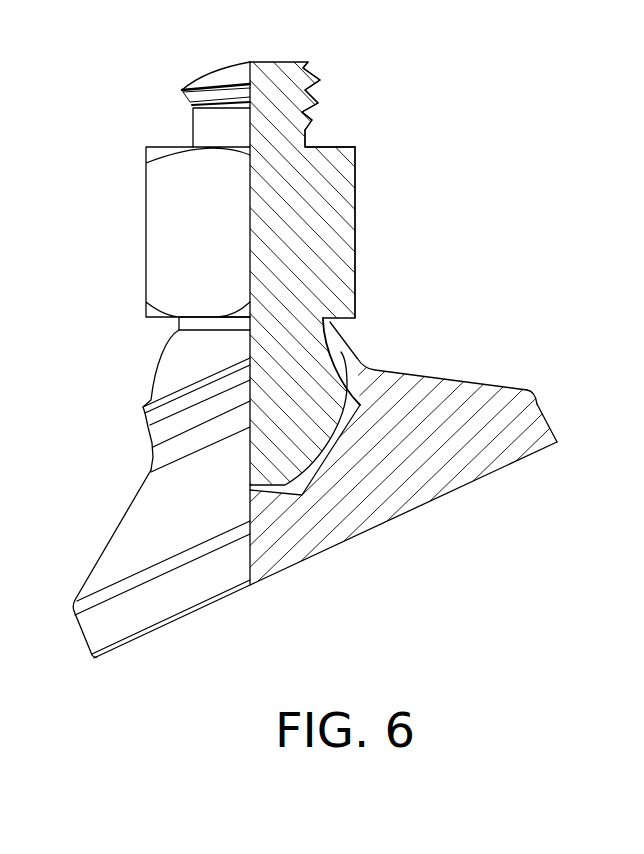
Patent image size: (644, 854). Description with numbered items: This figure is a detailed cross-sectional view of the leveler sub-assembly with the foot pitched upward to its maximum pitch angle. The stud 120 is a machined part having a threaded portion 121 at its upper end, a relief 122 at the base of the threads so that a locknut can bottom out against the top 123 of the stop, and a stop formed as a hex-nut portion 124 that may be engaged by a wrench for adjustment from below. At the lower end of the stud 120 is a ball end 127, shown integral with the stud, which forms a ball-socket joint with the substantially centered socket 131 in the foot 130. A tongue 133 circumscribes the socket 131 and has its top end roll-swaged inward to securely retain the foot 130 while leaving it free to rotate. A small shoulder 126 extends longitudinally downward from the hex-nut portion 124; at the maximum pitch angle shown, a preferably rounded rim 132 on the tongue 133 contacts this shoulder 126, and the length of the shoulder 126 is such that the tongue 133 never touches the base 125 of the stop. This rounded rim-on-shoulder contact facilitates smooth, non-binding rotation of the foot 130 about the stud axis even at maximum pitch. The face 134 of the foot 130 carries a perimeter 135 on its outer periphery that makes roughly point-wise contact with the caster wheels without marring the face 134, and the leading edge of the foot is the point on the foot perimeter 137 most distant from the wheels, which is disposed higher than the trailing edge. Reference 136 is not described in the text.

The stud 120 is at (363, 193).
The threaded portion 121 is at (310, 66).
The relief 122 is at (305, 130).
The top of the stop 123 is at (335, 147).
The hex-nut portion 124 is at (356, 249).
The base of the stop 125 is at (178, 318).
The shoulder 126 is at (170, 342).
The ball end 127 is at (175, 352).
The foot 130 is at (462, 373).
The socket 131 is at (372, 368).
The rim 132 is at (325, 320).
The tongue 133 is at (358, 330).
The face 134 is at (487, 382).
The perimeter 135 is at (521, 405).
The lower surface 136 is at (473, 487).
The foot perimeter 137 is at (558, 442).